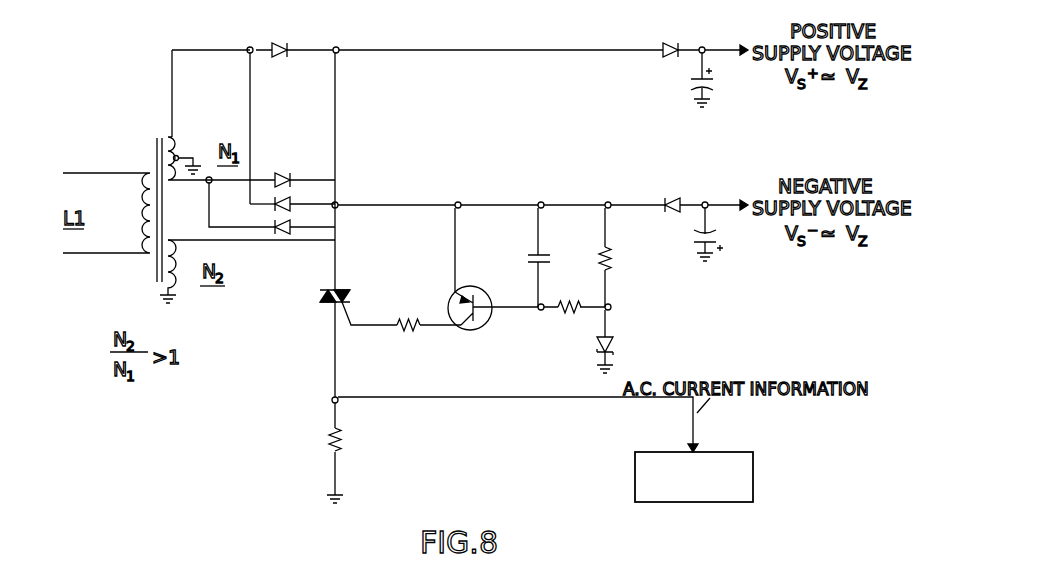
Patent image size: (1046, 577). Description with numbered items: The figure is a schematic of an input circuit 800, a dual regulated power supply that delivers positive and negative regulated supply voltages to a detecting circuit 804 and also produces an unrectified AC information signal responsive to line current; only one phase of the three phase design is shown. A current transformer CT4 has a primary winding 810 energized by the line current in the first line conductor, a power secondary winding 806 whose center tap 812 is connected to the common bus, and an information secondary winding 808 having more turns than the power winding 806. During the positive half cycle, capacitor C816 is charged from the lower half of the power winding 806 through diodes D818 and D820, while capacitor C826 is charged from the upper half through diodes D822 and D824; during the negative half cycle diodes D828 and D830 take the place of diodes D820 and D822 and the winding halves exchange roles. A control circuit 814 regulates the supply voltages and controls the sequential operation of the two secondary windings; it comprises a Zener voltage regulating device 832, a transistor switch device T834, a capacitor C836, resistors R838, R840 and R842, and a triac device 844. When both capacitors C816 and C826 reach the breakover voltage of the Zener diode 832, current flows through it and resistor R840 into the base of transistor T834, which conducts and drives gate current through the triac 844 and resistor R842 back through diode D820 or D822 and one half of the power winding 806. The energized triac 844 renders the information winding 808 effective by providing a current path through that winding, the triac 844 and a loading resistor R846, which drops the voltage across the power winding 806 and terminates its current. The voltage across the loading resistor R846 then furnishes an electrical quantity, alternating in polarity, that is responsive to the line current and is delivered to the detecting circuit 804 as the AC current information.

The current transformer CT4 is at (157, 134).
The primary winding 810 is at (147, 210).
The power secondary winding 806 is at (175, 147).
The center tap 812 is at (179, 159).
The information secondary winding 808 is at (176, 260).
The diode D822 is at (282, 41).
The diode D824 is at (665, 42).
The capacitor C826 is at (688, 83).
The diode D830 is at (285, 171).
The diode D828 is at (291, 202).
The diode D820 is at (274, 227).
The diode D818 is at (668, 196).
The capacitor C816 is at (693, 241).
The capacitor C836 is at (526, 256).
The resistor R838 is at (600, 257).
The resistor R840 is at (580, 314).
The resistor R842 is at (419, 333).
The loading resistor R846 is at (346, 447).
The triac device 844 is at (319, 298).
The switch device T834 is at (450, 300).
The control circuit 814 is at (481, 372).
The voltage regulating device 832 is at (597, 346).
The detecting circuit 804 is at (668, 450).
The input circuit 800 is at (548, 511).